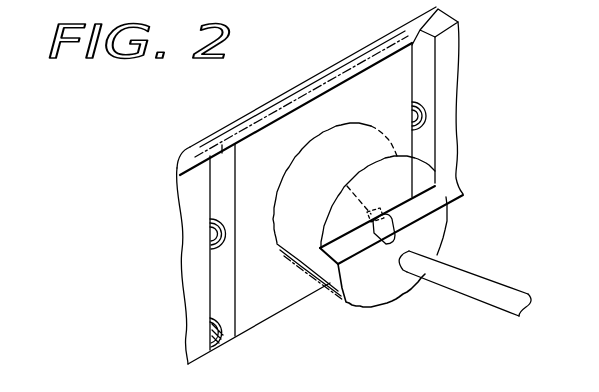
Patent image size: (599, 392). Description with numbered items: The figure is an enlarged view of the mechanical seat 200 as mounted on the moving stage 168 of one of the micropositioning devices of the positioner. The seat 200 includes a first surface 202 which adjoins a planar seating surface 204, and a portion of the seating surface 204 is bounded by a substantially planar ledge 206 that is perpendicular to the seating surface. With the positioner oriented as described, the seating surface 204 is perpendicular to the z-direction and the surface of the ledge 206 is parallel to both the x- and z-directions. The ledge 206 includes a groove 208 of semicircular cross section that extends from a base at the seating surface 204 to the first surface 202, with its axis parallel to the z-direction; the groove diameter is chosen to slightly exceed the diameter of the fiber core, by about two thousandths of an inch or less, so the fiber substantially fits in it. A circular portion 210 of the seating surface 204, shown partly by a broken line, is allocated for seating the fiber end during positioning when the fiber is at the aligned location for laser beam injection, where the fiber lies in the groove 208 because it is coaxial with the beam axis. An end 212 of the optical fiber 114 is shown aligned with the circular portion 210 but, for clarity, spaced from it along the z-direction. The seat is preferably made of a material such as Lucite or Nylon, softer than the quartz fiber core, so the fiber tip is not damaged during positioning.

The optical fiber 114 is at (484, 279).
The moving stage 168 is at (247, 157).
The mechanical seat 200 is at (333, 298).
The first surface 202 is at (379, 288).
The planar seating surface 204 is at (437, 174).
The planar ledge 206 is at (405, 182).
The groove 208 is at (396, 222).
The circular portion 210 is at (343, 192).
The fiber end 212 is at (403, 271).